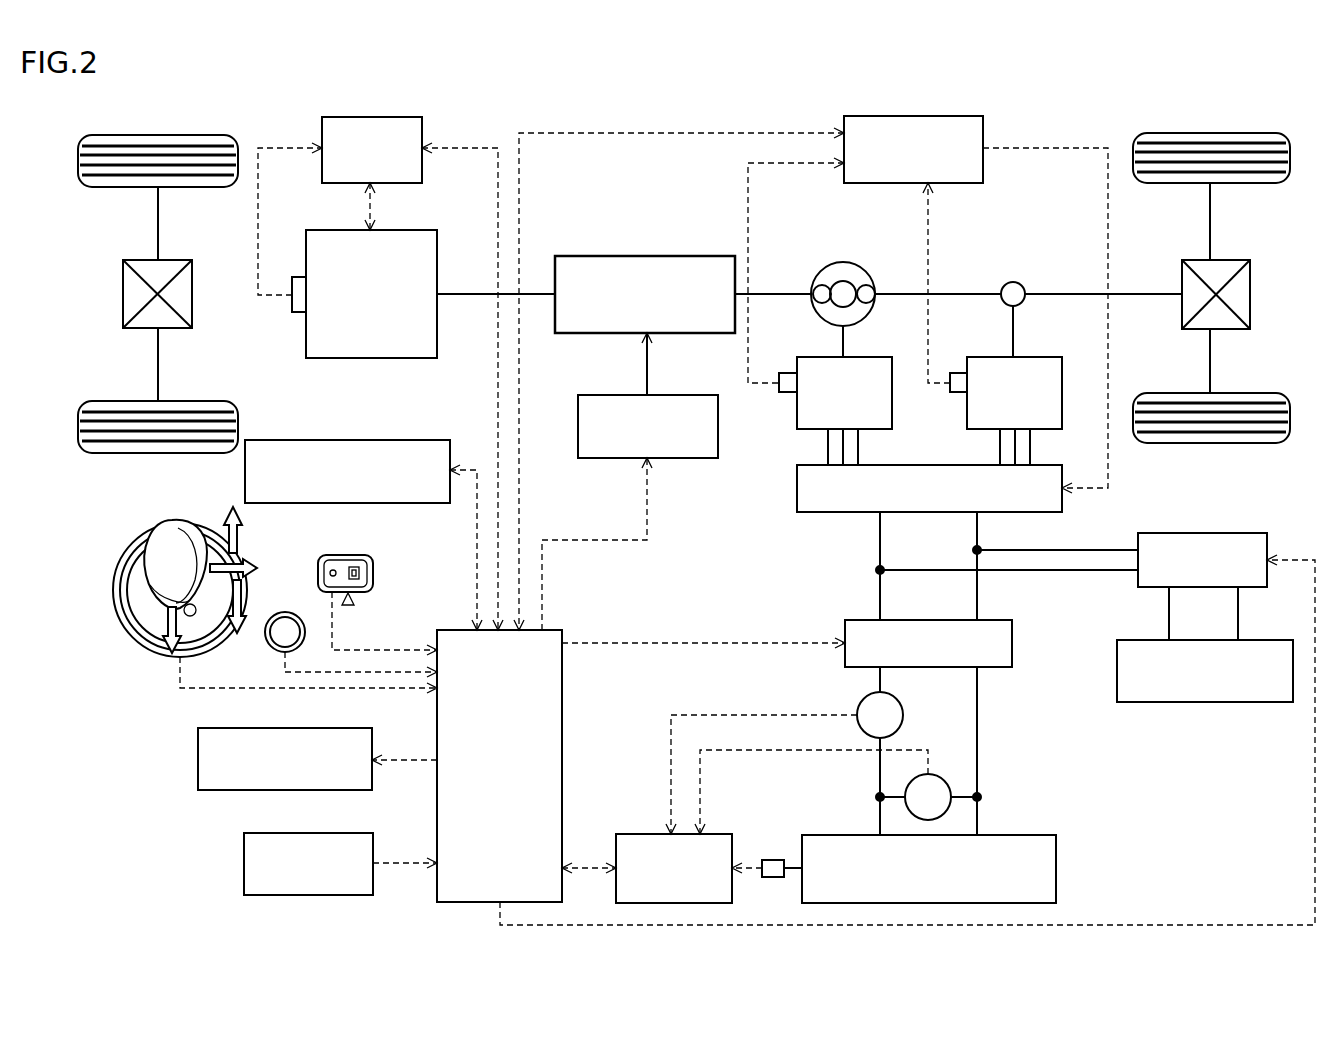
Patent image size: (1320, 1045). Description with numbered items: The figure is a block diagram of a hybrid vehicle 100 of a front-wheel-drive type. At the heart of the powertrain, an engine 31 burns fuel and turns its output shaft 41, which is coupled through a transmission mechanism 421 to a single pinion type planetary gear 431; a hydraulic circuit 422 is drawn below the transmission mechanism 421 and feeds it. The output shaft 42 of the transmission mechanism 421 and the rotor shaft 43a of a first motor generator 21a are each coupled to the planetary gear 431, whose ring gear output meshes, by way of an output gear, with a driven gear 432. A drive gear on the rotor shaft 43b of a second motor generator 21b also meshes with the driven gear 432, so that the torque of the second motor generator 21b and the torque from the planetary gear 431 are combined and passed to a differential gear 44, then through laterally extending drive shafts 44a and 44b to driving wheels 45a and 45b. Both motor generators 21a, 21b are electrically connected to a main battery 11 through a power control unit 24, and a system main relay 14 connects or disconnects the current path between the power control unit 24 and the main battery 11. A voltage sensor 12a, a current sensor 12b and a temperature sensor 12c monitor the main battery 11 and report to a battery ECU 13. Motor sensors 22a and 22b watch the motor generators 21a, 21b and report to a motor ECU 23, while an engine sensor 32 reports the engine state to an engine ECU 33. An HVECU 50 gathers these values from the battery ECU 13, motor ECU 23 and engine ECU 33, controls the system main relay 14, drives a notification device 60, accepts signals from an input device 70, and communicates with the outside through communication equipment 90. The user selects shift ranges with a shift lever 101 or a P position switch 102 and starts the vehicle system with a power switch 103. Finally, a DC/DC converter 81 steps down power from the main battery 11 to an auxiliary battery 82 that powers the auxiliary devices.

The vehicle 100 is at (1128, 119).
The main battery 11 is at (1022, 835).
The voltage sensor 12a is at (944, 781).
The current sensor 12b is at (903, 715).
The temperature sensor 12c is at (771, 860).
The battery ECU 13 is at (632, 834).
The system main relay 14 is at (1012, 645).
The first motor generator 21a is at (870, 357).
The second motor generator 21b is at (1040, 357).
The motor sensor 22a is at (789, 394).
The motor sensor 22b is at (960, 394).
The motor ECU 23 is at (935, 118).
The power control unit 24 is at (1050, 465).
The engine 31 is at (398, 230).
The engine sensor 32 is at (292, 312).
The engine ECU 33 is at (392, 117).
The output shaft 41 is at (536, 293).
The output shaft 42 is at (776, 293).
The transmission mechanism 421 is at (668, 257).
The hydraulic circuit 422 is at (668, 395).
The planetary gear 431 is at (843, 262).
The driven gear 432 is at (1022, 284).
The rotor shaft 43a is at (843, 342).
The rotor shaft 43b is at (1013, 338).
The differential gear 44 is at (1226, 260).
The drive shaft 44a is at (1210, 217).
The drive shaft 44b is at (1210, 370).
The driving wheel 45a is at (1240, 133).
The driving wheel 45b is at (1240, 443).
The HVECU 50 is at (562, 718).
The notification device 60 is at (330, 728).
The input device 70 is at (330, 833).
The DC/DC converter 81 is at (1215, 533).
The auxiliary battery 82 is at (1255, 640).
The communication equipment 90 is at (395, 440).
The shift lever 101 is at (178, 518).
The P position switch 102 is at (357, 555).
The power switch 103 is at (285, 612).